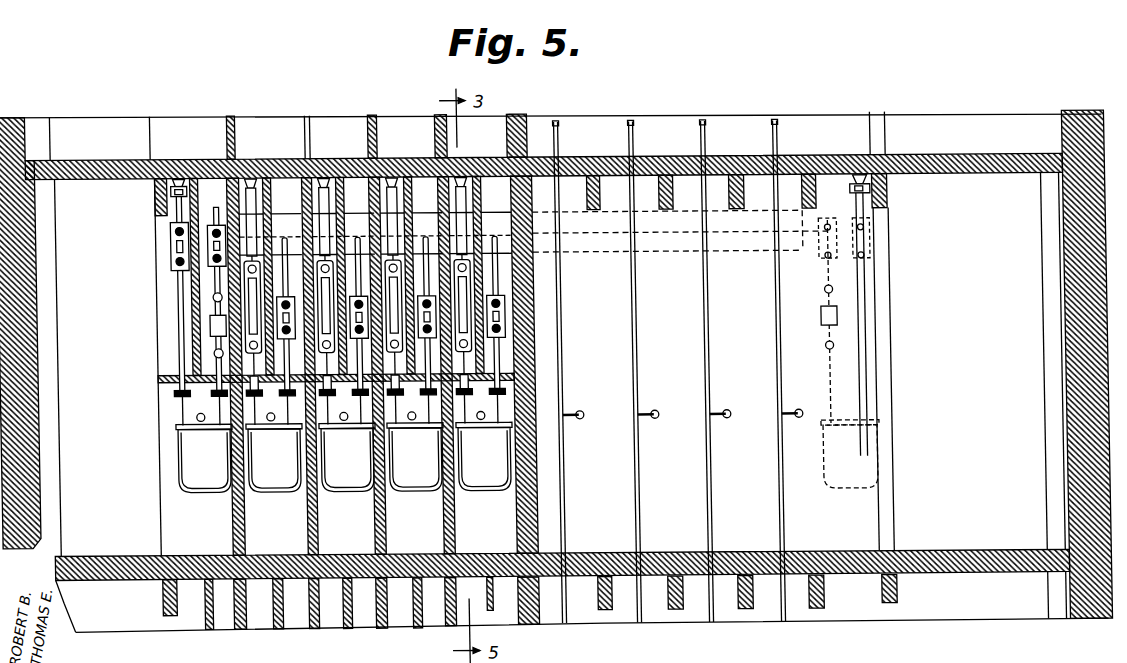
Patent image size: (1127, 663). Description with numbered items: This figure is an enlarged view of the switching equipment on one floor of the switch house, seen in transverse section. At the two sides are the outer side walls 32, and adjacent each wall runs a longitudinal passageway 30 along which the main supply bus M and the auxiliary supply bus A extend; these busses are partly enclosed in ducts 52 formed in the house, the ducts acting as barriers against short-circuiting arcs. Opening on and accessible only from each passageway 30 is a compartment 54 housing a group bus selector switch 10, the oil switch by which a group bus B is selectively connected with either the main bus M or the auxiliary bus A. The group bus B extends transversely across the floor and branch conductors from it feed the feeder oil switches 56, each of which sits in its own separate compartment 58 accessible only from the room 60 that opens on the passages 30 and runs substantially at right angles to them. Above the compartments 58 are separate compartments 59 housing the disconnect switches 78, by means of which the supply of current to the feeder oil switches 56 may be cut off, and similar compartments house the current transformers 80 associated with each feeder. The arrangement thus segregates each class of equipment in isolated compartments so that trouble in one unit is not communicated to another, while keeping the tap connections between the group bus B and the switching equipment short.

The group bus selector switch 10 is at (912, 476).
The longitudinal passageway 30 is at (560, 374).
The outer side wall 32 is at (26, 350).
The duct 52 is at (171, 205).
The compartment 54 is at (918, 415).
The feeder oil switch 56 is at (379, 457).
The compartment 58 is at (377, 341).
The compartment 59 is at (520, 356).
The room 60 is at (729, 127).
The disconnect switch 78 is at (506, 313).
The current transformer 80 is at (347, 306).
The auxiliary supply bus A is at (875, 191).
The group bus B is at (683, 235).
The main supply bus M is at (173, 190).